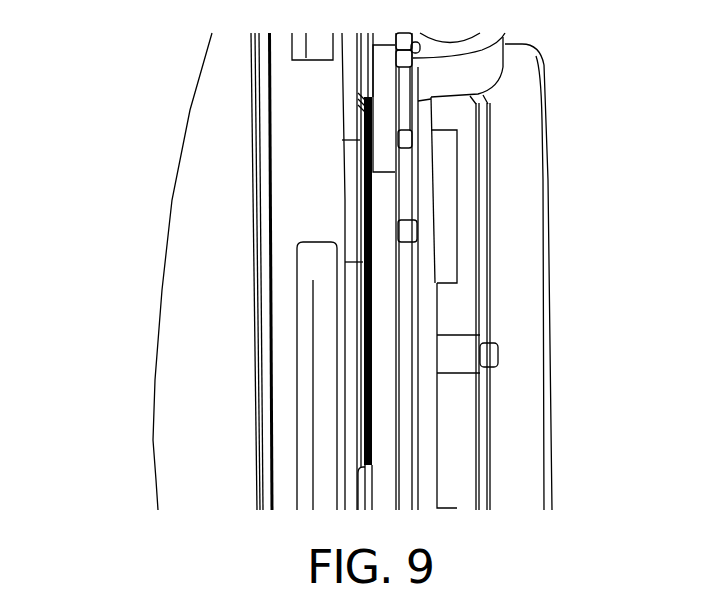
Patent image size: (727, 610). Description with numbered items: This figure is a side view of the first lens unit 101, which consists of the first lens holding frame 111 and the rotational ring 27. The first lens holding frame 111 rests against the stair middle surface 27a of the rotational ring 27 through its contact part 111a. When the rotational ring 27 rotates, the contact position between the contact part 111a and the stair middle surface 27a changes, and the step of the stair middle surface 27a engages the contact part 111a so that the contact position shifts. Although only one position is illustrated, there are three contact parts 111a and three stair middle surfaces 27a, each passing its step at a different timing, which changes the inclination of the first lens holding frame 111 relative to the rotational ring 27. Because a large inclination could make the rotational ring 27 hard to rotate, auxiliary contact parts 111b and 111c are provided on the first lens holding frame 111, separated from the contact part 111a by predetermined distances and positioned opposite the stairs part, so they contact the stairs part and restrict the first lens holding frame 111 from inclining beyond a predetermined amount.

The first lens unit 101 is at (217, 283).
The first lens holding frame 111 is at (310, 208).
The contact part 111a is at (368, 278).
The auxiliary contact part 111b is at (365, 448).
The auxiliary contact part 111c is at (360, 110).
The rotational ring 27 is at (390, 260).
The stair middle surface 27a is at (372, 280).